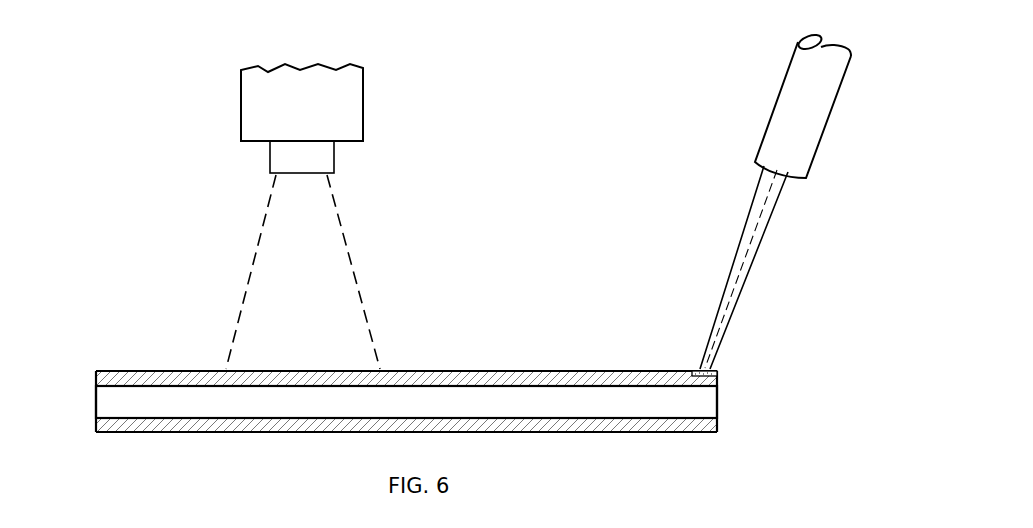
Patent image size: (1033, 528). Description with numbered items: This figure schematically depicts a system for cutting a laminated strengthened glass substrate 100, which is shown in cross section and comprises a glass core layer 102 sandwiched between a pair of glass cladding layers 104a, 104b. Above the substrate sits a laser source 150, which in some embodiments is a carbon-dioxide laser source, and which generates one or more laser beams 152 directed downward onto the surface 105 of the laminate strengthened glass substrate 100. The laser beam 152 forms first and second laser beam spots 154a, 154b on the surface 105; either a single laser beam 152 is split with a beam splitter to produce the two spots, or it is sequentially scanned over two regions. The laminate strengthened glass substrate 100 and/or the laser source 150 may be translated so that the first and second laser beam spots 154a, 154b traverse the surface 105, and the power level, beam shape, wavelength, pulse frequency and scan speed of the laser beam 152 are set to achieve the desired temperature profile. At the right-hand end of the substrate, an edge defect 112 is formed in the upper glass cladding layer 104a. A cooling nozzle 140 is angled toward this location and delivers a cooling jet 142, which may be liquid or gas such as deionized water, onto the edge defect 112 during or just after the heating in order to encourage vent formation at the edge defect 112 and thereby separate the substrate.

The laminated strengthened glass substrate 100 is at (405, 384).
The glass core layer 102 is at (713, 404).
The glass cladding layer 104a is at (717, 383).
The glass cladding layer 104b is at (717, 426).
The surface 105 is at (523, 370).
The edge defect 112 is at (692, 370).
The cooling nozzle 140 is at (774, 113).
The cooling jet 142 is at (733, 266).
The laser source 150 is at (364, 104).
The laser beam 152 is at (350, 268).
The first laser beam spot 154a is at (438, 329).
The second laser beam spot 154b is at (383, 364).